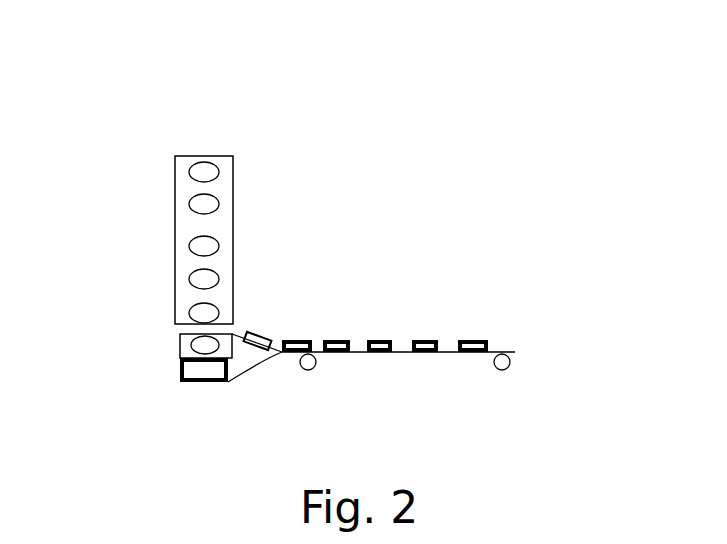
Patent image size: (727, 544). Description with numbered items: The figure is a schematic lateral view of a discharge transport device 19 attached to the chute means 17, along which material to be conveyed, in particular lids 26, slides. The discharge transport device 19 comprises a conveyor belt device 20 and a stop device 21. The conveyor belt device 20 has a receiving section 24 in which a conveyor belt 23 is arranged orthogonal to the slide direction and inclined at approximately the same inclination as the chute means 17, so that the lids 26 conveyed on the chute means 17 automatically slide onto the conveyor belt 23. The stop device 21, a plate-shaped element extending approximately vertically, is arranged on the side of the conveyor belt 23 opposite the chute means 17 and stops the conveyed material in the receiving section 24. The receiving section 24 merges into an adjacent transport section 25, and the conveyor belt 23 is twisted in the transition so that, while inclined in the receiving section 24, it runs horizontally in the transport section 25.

The discharge transport device 19 is at (455, 115).
The chute means 17 is at (220, 225).
The lids 26 is at (205, 165).
The stop device 21 is at (175, 401).
The receiving section 24 is at (210, 382).
The conveyor belt 23 is at (347, 345).
The conveyor belt device 20 is at (438, 353).
The transport section 25 is at (370, 353).